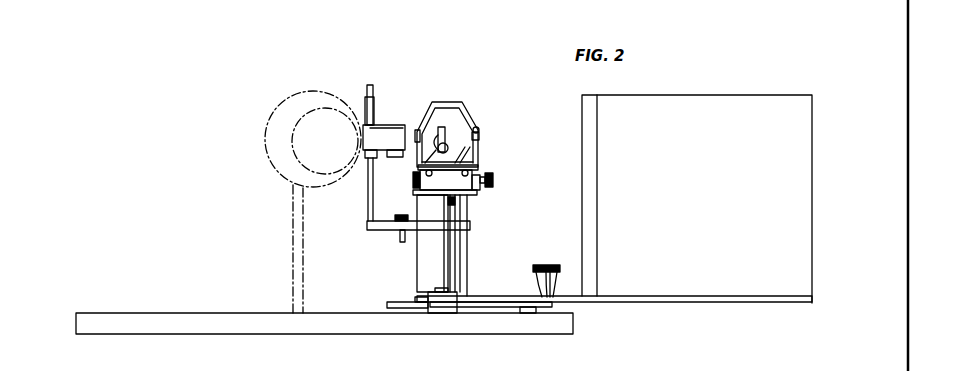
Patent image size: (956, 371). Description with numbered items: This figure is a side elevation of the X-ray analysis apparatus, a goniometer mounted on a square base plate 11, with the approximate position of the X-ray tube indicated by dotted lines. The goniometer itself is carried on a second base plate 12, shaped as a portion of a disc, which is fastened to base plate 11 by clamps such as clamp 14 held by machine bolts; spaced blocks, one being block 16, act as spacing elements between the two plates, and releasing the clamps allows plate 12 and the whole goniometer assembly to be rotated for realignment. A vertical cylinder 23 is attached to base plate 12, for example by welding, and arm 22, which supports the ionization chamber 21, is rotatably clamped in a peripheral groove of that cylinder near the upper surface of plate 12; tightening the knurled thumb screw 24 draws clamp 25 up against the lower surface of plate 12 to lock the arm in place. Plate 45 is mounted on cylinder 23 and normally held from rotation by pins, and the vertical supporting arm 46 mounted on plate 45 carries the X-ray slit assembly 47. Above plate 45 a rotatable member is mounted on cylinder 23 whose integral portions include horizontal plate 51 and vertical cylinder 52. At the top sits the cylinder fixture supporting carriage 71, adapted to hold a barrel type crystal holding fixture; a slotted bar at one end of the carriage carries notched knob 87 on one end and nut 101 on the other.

The base plate 11 is at (149, 319).
The base plate 12 is at (394, 302).
The clamp 14 is at (443, 313).
The block 16 is at (522, 313).
The ionization chamber 21 is at (714, 97).
The arm 22 is at (498, 297).
The vertical cylinder 23 is at (466, 247).
The knurled thumb screw 24 is at (543, 266).
The clamp 25 is at (553, 304).
The plate 45 is at (389, 231).
The vertical supporting arm 46 is at (367, 205).
The X-ray slit assembly 47 is at (396, 135).
The horizontal plate 51 is at (428, 223).
The vertical cylinder 52 is at (466, 211).
The cylinder fixture supporting carriage 71 is at (470, 158).
The notched knob 87 is at (494, 182).
The nut 101 is at (413, 180).